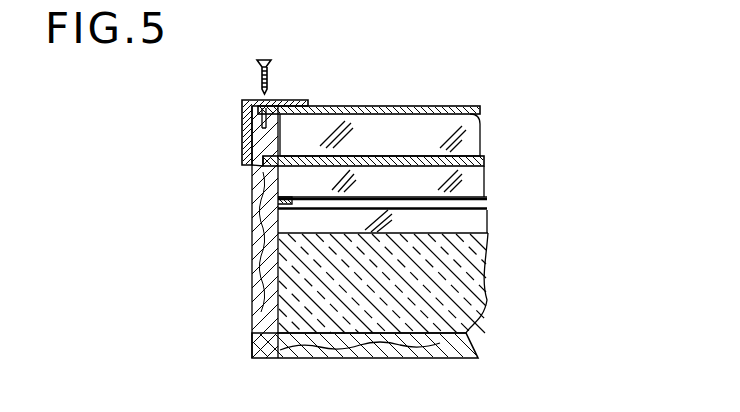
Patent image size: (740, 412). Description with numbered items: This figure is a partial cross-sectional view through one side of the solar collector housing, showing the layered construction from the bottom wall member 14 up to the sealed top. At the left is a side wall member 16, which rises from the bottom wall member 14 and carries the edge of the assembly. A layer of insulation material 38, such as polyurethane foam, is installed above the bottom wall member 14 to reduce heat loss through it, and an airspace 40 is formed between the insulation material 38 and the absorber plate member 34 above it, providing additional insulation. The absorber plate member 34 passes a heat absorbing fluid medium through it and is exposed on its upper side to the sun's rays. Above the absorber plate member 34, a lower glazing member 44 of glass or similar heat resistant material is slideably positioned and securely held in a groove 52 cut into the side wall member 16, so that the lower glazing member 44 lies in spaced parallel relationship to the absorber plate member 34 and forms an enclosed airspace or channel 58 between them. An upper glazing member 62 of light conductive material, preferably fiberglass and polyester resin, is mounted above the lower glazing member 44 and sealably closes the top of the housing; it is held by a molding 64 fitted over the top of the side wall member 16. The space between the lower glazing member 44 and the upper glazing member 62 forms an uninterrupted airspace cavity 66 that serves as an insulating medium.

The bottom wall member 14 is at (453, 360).
The side wall member 16 is at (248, 307).
The absorber plate member 34 is at (310, 207).
The insulation material 38 is at (450, 285).
The airspace 40 is at (467, 220).
The lower glazing member 44 is at (483, 163).
The groove 52 is at (245, 172).
The enclosed airspace or channel 58 is at (473, 183).
The upper glazing member 62 is at (408, 108).
The molding 64 is at (243, 128).
The uninterrupted airspace cavity or channel 66 is at (467, 143).